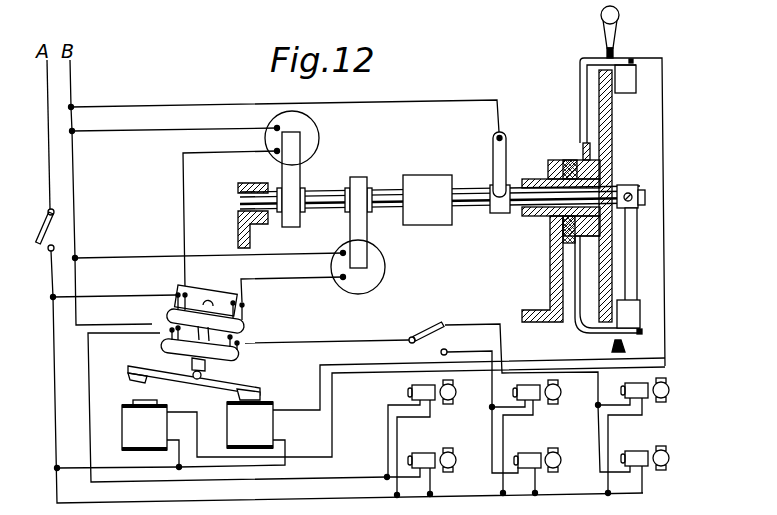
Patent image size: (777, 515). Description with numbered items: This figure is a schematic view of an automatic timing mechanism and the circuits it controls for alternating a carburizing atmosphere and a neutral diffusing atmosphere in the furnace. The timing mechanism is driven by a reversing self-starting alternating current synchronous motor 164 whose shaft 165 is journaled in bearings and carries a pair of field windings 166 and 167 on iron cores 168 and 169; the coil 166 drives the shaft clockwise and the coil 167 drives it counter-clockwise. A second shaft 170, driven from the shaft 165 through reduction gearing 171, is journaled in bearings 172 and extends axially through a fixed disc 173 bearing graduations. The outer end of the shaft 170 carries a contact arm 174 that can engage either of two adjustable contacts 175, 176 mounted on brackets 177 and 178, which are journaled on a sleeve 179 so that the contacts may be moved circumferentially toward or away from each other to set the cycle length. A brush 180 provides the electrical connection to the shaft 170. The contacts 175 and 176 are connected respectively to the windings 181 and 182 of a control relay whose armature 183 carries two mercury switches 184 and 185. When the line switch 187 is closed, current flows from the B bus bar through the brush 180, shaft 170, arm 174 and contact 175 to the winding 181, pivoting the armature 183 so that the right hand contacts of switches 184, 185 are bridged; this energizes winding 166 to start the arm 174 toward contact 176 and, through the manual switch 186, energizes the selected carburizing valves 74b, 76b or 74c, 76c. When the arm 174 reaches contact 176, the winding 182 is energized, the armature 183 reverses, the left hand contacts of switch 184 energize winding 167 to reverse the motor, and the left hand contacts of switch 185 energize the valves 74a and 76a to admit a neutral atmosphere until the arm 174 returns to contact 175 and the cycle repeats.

The gas valve 74a is at (456, 465).
The gas valve 74b is at (561, 465).
The gas valve 74c is at (669, 463).
The air valve 76a is at (456, 397).
The air valve 76b is at (561, 397).
The air valve 76c is at (669, 395).
The synchronous motor 164 is at (328, 188).
The shaft 165 is at (334, 216).
The field winding 166 is at (374, 273).
The field winding 167 is at (318, 136).
The iron core 168 is at (368, 232).
The iron core 169 is at (293, 170).
The second shaft 170 is at (481, 209).
The reduction gearing 171 is at (426, 188).
The bearings 172 is at (536, 215).
The fixed disc 173 is at (605, 148).
The contact arm 174 is at (631, 257).
The adjustable contact 175 is at (635, 323).
The adjustable contact 176 is at (631, 94).
The bracket 177 is at (571, 327).
The bracket 178 is at (584, 72).
The sleeve 179 is at (605, 173).
The brush 180 is at (504, 160).
The relay winding 181 is at (268, 428).
The relay winding 182 is at (130, 420).
The armature 183 is at (224, 385).
The mercury switch 184 is at (218, 316).
The mercury switch 185 is at (190, 347).
The manual switch 186 is at (431, 328).
The line switch 187 is at (46, 229).